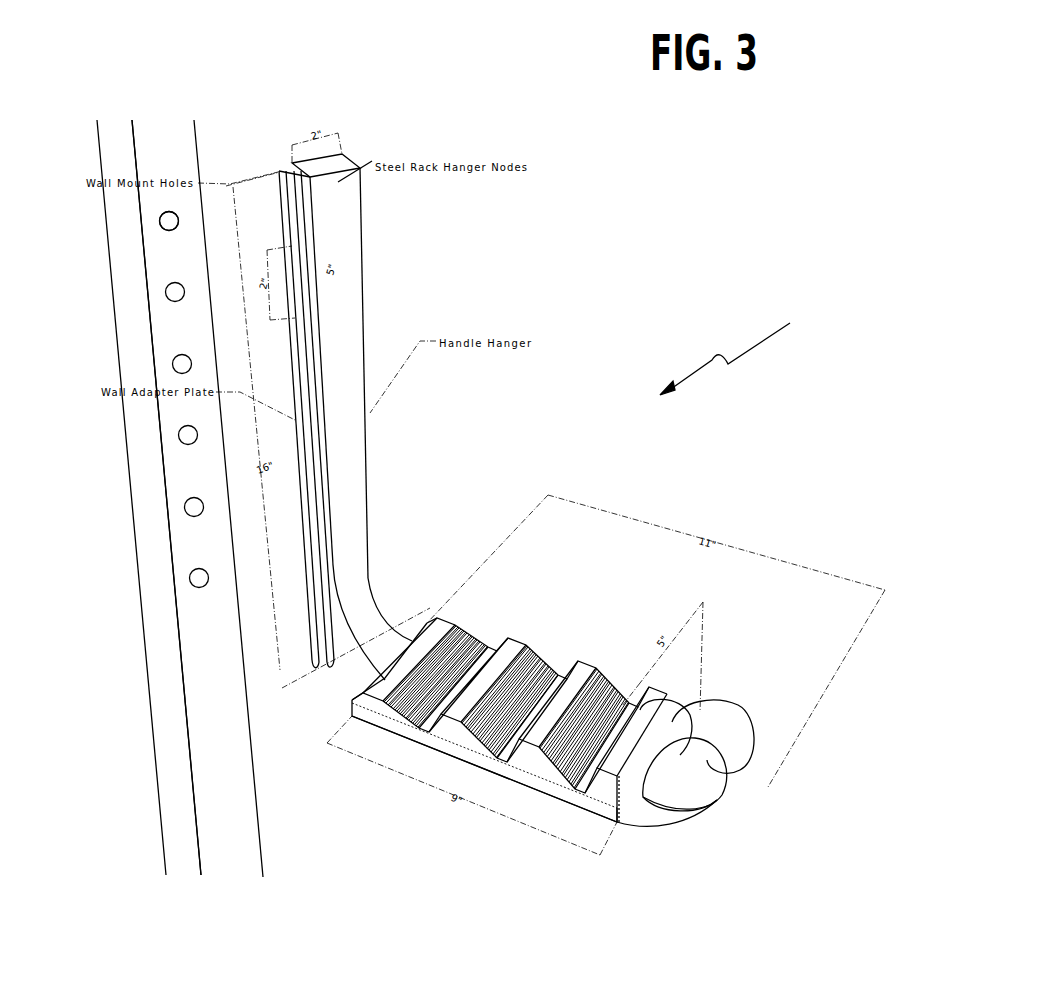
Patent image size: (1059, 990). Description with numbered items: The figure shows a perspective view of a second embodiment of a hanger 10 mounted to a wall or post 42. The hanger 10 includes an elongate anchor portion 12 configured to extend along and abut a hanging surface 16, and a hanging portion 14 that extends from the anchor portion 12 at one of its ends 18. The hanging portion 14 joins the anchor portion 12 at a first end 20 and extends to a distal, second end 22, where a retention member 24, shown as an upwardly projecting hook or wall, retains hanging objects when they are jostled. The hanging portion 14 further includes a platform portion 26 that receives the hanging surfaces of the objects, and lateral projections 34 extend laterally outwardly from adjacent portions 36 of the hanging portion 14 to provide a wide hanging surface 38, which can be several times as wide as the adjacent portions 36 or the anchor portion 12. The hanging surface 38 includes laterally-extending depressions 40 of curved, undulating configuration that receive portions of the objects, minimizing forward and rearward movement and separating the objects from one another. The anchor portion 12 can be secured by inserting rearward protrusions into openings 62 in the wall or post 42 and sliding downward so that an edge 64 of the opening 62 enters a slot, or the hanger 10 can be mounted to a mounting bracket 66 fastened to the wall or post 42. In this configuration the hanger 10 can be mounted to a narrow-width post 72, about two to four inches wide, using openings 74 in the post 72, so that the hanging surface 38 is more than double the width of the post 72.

The hanger 10 is at (739, 350).
The anchor portion 12 is at (337, 183).
The hanging portion 14 is at (695, 800).
The hanging surface 16 is at (193, 243).
The end of the anchor portion 18 is at (340, 657).
The first end of the hanging portion 20 is at (347, 663).
The second end of the hanging portion 22 is at (707, 800).
The retention member 24 is at (707, 760).
The platform portion 26 is at (535, 780).
The lateral projections 34 is at (672, 720).
The adjacent portions 36 is at (388, 644).
The hanging surface 38 is at (492, 720).
The laterally-extending depressions 40 is at (478, 643).
The wall or post 42 is at (142, 142).
The openings 62 is at (168, 218).
The edge of the opening 64 is at (170, 225).
The mounting bracket 66 is at (282, 167).
The narrow-width post 72 is at (183, 128).
The openings in the post 74 is at (177, 302).